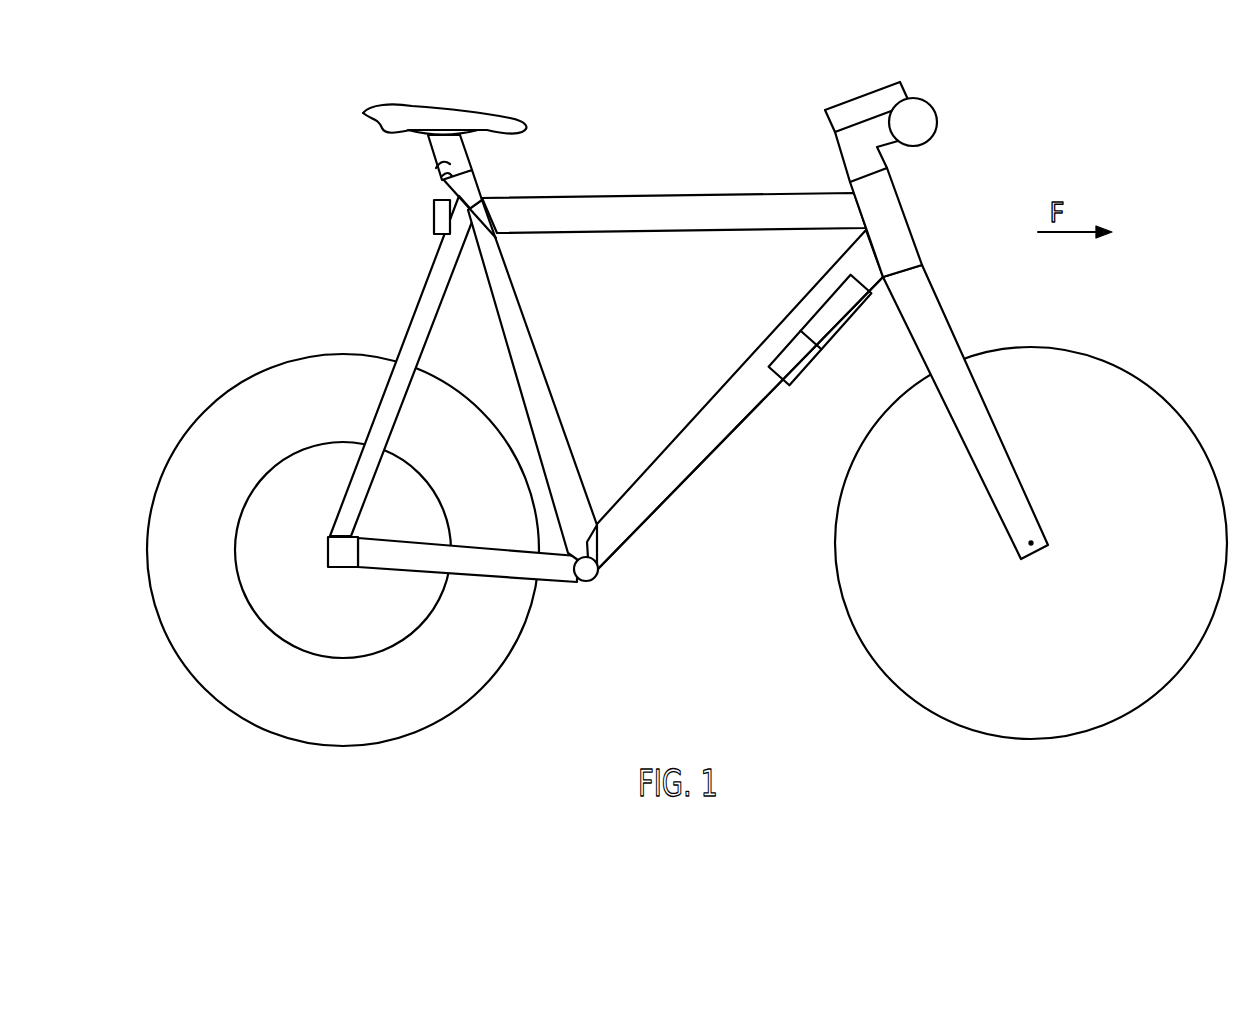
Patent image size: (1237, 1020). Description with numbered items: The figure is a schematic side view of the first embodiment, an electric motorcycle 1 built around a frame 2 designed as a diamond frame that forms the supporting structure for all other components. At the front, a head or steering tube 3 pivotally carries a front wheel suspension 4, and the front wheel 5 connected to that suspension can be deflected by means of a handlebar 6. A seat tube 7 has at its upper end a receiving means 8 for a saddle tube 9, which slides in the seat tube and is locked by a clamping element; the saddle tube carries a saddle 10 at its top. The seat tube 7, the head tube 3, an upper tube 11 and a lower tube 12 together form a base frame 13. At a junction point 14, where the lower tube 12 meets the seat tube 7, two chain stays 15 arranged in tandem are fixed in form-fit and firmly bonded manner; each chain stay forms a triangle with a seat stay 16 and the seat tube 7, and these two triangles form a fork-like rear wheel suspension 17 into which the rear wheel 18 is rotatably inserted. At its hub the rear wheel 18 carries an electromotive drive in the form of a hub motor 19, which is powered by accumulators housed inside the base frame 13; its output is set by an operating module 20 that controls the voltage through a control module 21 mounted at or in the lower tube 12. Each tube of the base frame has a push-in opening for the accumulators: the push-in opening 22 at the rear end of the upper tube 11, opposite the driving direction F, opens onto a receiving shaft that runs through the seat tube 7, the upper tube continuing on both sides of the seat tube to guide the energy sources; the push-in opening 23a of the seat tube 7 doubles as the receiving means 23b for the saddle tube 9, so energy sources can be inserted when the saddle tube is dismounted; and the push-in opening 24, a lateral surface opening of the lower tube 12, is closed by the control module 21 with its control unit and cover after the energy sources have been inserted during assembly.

The electric motorcycle 1 is at (687, 398).
The frame 2 is at (606, 399).
The head or steering tube 3 is at (908, 215).
The front wheel suspension 4 is at (943, 307).
The front wheel 5 is at (1096, 358).
The handlebar 6 is at (920, 110).
The seat tube 7 is at (528, 345).
The receiving means 8 is at (488, 186).
The saddle tube 9 is at (432, 153).
The saddle 10 is at (445, 108).
The upper tube 11 is at (686, 196).
The lower tube 12 is at (740, 400).
The base frame 13 is at (694, 492).
The junction point 14 is at (588, 582).
The chain stays 15 is at (507, 570).
The seat stay 16 is at (415, 325).
The rear wheel suspension 17 is at (403, 563).
The rear wheel 18 is at (275, 373).
The hub motor 19 is at (279, 563).
The operating module 20 is at (858, 102).
The control module 21 is at (822, 356).
The push-in opening 22 is at (434, 215).
The push-in opening 23a is at (440, 172).
The receiving means 23b is at (447, 174).
The push-in opening 24 is at (782, 392).